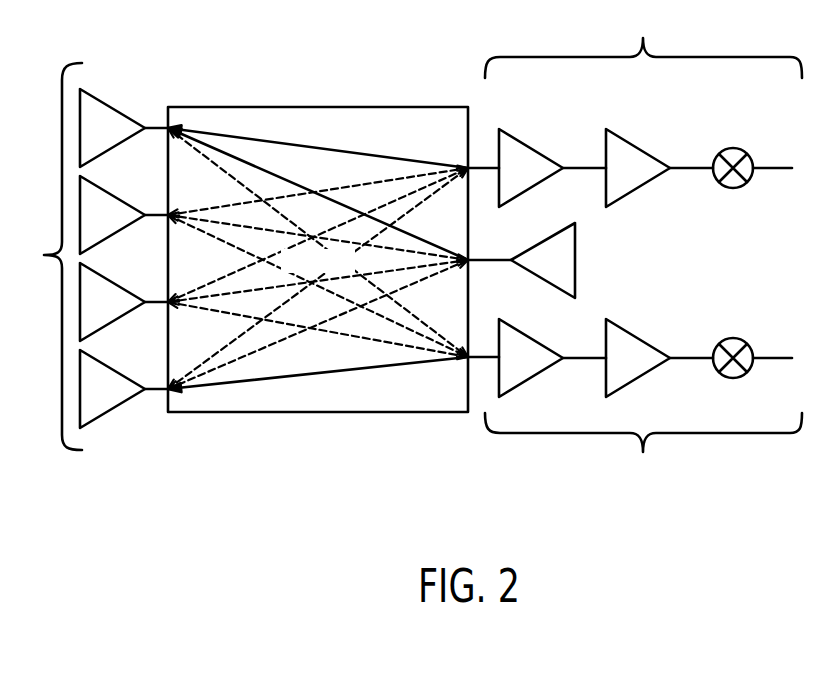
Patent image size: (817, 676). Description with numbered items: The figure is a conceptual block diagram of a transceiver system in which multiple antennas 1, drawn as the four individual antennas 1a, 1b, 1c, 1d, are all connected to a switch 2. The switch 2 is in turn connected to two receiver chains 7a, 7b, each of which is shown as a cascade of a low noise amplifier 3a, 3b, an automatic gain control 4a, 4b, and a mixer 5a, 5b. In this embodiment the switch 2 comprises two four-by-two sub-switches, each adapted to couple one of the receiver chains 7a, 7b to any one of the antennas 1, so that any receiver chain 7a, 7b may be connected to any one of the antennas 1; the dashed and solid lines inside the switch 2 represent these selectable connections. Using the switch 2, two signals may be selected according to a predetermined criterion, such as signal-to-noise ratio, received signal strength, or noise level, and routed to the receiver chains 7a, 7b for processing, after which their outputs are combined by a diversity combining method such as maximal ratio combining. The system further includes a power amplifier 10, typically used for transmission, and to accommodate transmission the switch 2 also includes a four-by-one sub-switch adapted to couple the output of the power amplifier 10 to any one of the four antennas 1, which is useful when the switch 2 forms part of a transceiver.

The antennas 1 is at (98, 253).
The antenna 1a is at (122, 114).
The antenna 1b is at (122, 201).
The antenna 1c is at (122, 288).
The antenna 1d is at (122, 375).
The switch 2 is at (347, 107).
The low noise amplifier 3a is at (530, 148).
The low noise amplifier 3b is at (530, 338).
The automatic gain control 4a is at (637, 148).
The automatic gain control 4b is at (637, 338).
The mixer 5a is at (733, 148).
The mixer 5b is at (733, 338).
The receiver chain 7a is at (635, 109).
The receiver chain 7b is at (635, 386).
The power amplifier 10 is at (577, 258).